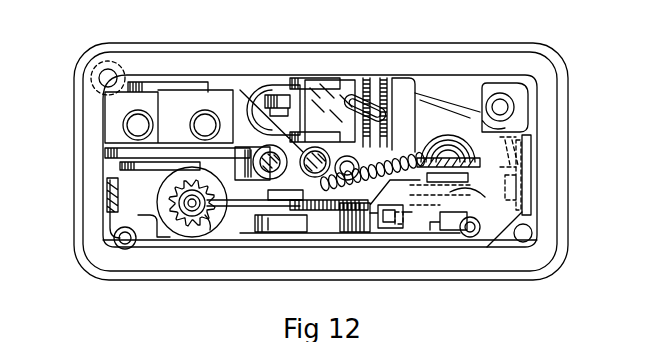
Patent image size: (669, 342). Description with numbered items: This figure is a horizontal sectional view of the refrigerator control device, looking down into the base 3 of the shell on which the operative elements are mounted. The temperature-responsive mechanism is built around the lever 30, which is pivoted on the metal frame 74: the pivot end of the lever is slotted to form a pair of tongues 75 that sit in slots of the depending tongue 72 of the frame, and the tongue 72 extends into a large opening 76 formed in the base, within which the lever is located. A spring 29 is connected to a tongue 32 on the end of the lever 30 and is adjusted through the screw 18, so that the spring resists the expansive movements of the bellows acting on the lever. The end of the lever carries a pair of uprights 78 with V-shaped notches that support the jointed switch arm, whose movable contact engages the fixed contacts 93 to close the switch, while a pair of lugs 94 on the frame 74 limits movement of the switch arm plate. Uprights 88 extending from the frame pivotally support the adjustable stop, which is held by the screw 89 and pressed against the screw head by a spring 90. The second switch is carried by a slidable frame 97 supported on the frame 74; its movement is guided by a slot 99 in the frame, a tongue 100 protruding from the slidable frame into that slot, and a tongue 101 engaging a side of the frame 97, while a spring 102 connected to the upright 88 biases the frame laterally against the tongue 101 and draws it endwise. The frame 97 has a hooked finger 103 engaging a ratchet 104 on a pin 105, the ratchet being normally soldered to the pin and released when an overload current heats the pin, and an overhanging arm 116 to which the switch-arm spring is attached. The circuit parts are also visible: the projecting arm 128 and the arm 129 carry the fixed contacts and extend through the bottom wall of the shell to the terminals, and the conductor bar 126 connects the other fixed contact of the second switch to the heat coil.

The base part 3 is at (547, 100).
The screw 18 is at (268, 176).
The spring 29 is at (273, 107).
The lever 30 is at (350, 103).
The tongue 32 is at (297, 83).
The tongue 72 is at (513, 181).
The metal frame 74 is at (408, 97).
The tongues 75 is at (540, 142).
The opening 76 is at (427, 117).
The uprights 78 is at (309, 148).
The uprights 88 is at (452, 158).
The screw 89 is at (318, 176).
The spring 90 is at (252, 97).
The fixed contacts 93 is at (205, 113).
The lugs 94 is at (378, 127).
The slidable frame 97 is at (432, 235).
The slot 99 is at (397, 220).
The tongue 100 is at (382, 220).
The tongue 101 is at (262, 222).
The spring 102 is at (347, 207).
The hooked finger 103 is at (197, 230).
The ratchet 104 is at (178, 222).
The pin 105 is at (190, 205).
The overhanging arm 116 is at (212, 208).
The conductor bar 126 is at (118, 205).
The projecting arm 128 is at (207, 123).
The arm 129 is at (143, 160).